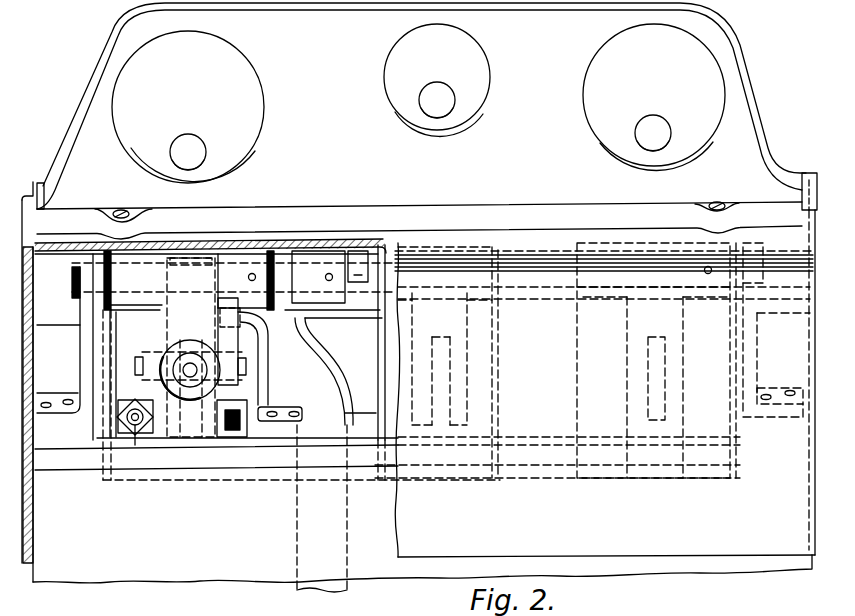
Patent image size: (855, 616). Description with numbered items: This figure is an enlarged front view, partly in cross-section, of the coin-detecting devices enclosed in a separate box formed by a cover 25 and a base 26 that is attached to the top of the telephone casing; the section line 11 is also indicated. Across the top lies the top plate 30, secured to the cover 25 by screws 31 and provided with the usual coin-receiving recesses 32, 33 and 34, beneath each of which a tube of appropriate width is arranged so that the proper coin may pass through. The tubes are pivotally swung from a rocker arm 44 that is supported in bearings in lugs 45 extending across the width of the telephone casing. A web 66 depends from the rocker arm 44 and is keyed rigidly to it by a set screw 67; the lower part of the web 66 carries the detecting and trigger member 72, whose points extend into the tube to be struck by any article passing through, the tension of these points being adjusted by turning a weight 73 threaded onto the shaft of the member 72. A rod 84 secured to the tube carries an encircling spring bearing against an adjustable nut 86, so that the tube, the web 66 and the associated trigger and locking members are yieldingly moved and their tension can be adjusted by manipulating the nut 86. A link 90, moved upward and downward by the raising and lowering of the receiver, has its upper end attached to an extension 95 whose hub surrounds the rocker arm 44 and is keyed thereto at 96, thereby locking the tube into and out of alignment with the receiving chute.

The section line 11 is at (31, 600).
The cover 25 is at (412, 550).
The base 26 is at (67, 457).
The top plate 30 is at (122, 44).
The screws 31 is at (118, 209).
The coin-receiving recess 32 is at (478, 87).
The coin-receiving recess 33 is at (706, 83).
The coin-receiving recess 34 is at (252, 116).
The rocker arm 44 is at (372, 258).
The lugs 45 is at (82, 357).
The web 66 is at (226, 256).
The set screw 67 is at (254, 274).
The detecting and trigger member 72 is at (186, 376).
The weight 73 is at (170, 350).
The rod 84 is at (134, 440).
The adjustable nut 86 is at (140, 433).
The link 90 is at (328, 384).
The extension 95 is at (319, 251).
The keying point 96 is at (332, 275).